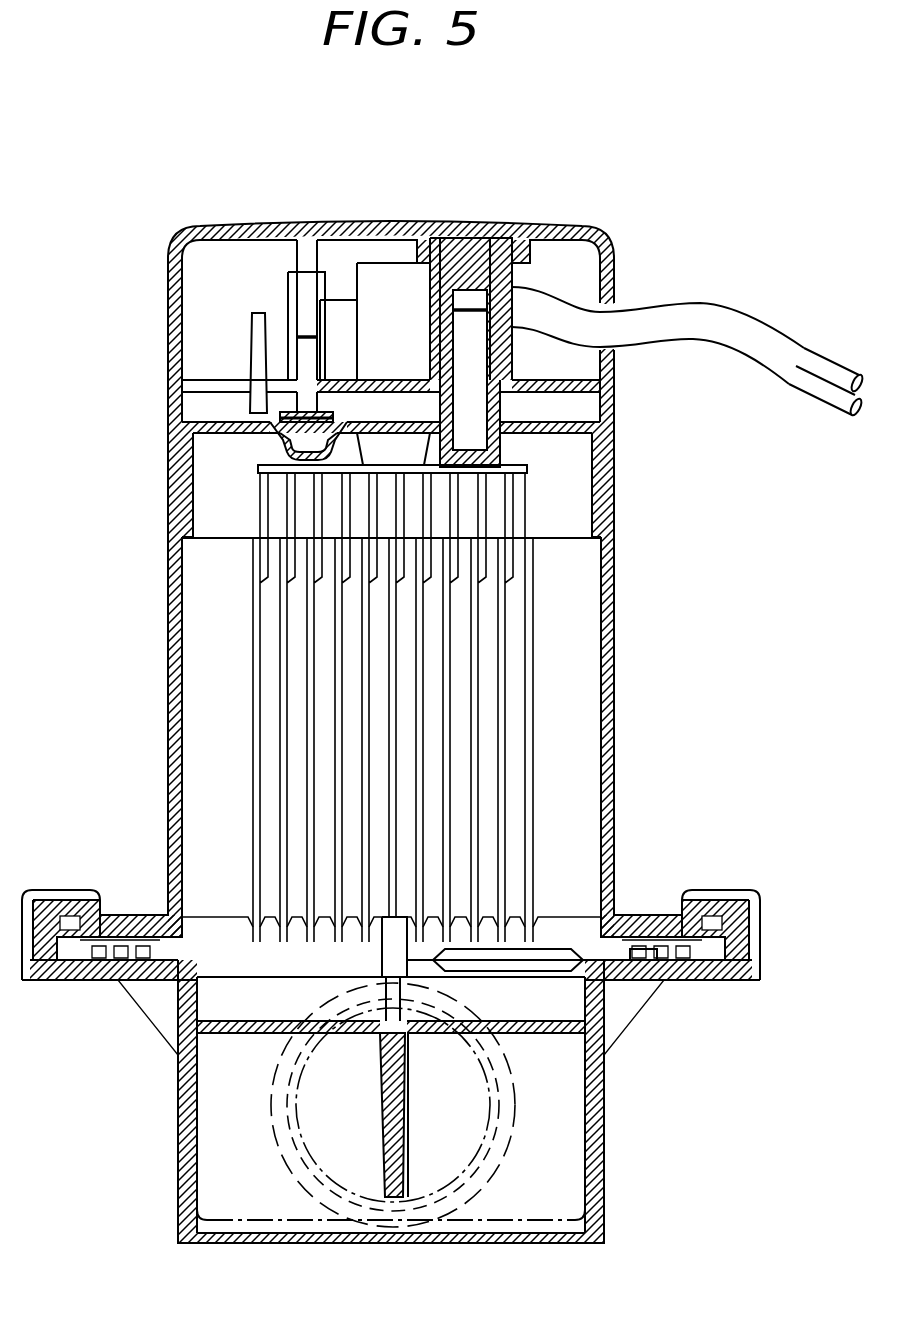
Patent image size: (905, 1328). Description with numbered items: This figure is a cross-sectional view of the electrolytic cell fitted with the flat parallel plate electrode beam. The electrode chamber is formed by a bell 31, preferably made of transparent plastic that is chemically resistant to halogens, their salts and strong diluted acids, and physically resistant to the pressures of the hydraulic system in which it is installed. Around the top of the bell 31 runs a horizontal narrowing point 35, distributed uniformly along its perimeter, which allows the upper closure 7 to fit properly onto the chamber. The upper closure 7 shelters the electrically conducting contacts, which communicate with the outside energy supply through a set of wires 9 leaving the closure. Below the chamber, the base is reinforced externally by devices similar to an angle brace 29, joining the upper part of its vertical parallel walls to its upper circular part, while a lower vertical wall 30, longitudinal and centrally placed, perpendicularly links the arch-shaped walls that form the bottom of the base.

The upper closure 7 is at (180, 283).
The set of wires 9 is at (732, 318).
The horizontal narrowing point 35 is at (615, 474).
The bell 31 is at (613, 714).
The angle brace 29 is at (163, 1010).
The lower vertical wall 30 is at (397, 1093).